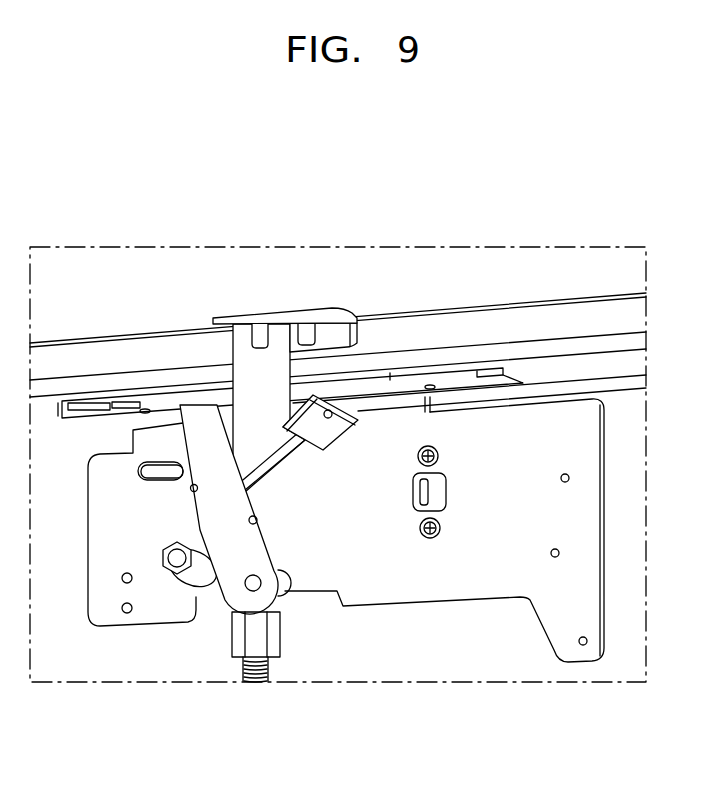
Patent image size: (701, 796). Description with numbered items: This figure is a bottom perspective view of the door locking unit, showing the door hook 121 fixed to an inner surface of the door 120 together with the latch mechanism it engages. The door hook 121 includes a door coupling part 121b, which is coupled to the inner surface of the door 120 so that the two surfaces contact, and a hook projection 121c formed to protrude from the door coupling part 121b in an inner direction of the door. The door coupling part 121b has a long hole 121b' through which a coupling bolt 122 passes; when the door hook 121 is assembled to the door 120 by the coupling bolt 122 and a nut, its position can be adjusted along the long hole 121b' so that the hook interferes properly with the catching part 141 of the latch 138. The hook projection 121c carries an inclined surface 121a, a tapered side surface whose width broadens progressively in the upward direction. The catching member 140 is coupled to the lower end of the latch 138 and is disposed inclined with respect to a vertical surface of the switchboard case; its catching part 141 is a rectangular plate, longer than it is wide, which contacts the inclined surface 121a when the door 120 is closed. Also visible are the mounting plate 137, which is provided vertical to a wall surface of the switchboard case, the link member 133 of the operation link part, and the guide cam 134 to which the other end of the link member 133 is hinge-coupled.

The door 120 is at (413, 293).
The door hook 121 is at (270, 469).
The inclined surface 121a is at (275, 470).
The door coupling part 121b is at (243, 276).
The long hole 121b' is at (314, 274).
The hook projection 121c is at (250, 370).
The coupling bolt 122 is at (328, 320).
The link member 133 is at (238, 563).
The guide cam 134 is at (183, 523).
The mounting plate 137 is at (440, 575).
The latch 138 is at (352, 427).
The catching member 140 is at (346, 579).
The catching part 141 is at (331, 433).